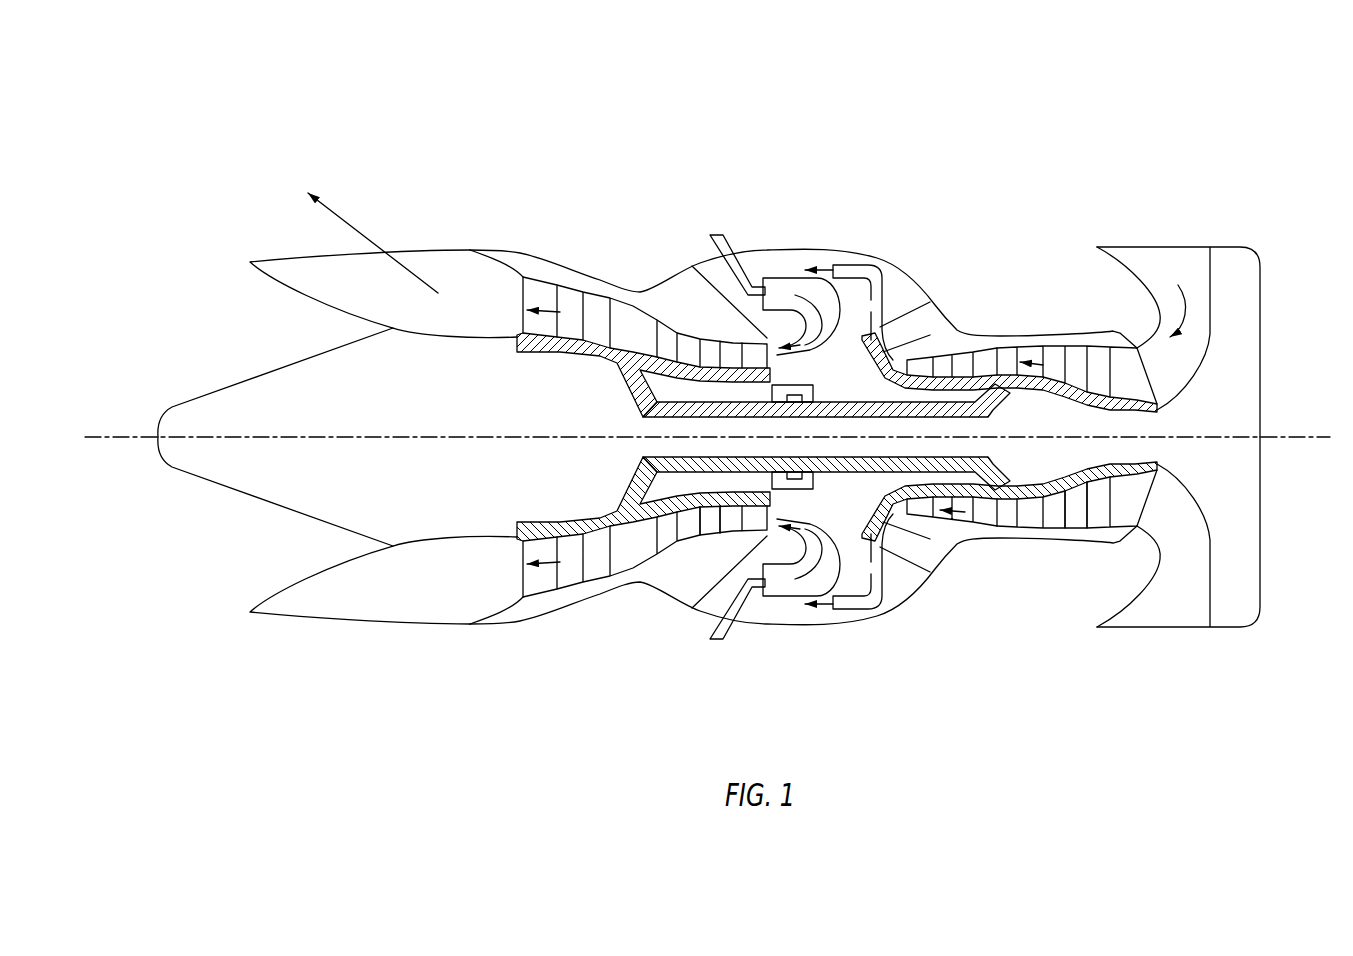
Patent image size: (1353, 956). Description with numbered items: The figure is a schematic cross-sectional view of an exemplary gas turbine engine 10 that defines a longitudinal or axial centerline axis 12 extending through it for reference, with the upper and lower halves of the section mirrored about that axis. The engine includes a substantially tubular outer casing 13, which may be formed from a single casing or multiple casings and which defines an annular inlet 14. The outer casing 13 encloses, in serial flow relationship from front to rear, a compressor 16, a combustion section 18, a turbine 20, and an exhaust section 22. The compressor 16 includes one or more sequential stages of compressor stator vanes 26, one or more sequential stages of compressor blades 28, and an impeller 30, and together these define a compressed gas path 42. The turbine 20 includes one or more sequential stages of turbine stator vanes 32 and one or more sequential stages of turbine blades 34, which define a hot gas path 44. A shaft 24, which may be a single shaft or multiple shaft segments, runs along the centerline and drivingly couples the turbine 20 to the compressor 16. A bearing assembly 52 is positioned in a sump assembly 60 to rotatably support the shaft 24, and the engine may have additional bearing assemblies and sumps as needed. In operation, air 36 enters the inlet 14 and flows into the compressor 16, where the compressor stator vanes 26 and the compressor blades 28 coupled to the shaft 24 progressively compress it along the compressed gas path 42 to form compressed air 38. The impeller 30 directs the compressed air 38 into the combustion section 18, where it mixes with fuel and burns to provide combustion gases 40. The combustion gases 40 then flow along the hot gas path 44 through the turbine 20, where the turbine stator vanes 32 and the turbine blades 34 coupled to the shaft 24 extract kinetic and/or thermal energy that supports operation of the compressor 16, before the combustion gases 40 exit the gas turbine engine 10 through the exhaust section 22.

The gas turbine engine 10 is at (253, 137).
The longitudinal or axial centerline axis 12 is at (135, 434).
The outer casing 13 is at (777, 241).
The annular inlet 14 is at (1173, 628).
The compressor 16 is at (1017, 552).
The combustion section 18 is at (790, 607).
The turbine 20 is at (663, 565).
The exhaust section 22 is at (400, 620).
The shaft 24 is at (633, 467).
The compressor stator vanes 26 is at (1075, 517).
The compressor blades 28 is at (1058, 518).
The impeller 30 is at (887, 357).
The turbine stator vanes 32 is at (720, 527).
The turbine blades 34 is at (697, 528).
The air 36 is at (340, 230).
The compressed air 38 is at (866, 255).
The combustion gases 40 is at (572, 310).
The compressed gas path 42 is at (1053, 503).
The hot gas path 44 is at (557, 597).
The bearing assembly 52 is at (800, 473).
The sump assembly 60 is at (813, 484).